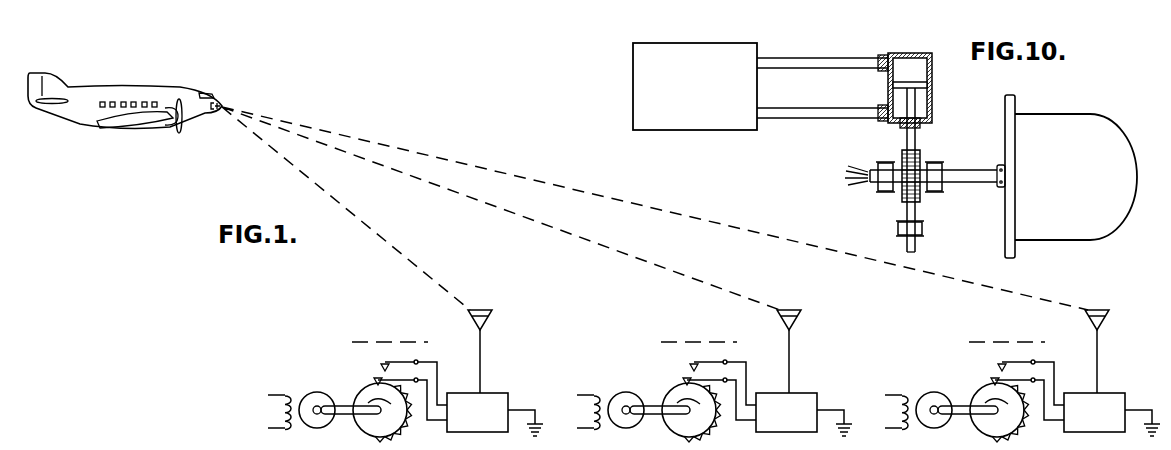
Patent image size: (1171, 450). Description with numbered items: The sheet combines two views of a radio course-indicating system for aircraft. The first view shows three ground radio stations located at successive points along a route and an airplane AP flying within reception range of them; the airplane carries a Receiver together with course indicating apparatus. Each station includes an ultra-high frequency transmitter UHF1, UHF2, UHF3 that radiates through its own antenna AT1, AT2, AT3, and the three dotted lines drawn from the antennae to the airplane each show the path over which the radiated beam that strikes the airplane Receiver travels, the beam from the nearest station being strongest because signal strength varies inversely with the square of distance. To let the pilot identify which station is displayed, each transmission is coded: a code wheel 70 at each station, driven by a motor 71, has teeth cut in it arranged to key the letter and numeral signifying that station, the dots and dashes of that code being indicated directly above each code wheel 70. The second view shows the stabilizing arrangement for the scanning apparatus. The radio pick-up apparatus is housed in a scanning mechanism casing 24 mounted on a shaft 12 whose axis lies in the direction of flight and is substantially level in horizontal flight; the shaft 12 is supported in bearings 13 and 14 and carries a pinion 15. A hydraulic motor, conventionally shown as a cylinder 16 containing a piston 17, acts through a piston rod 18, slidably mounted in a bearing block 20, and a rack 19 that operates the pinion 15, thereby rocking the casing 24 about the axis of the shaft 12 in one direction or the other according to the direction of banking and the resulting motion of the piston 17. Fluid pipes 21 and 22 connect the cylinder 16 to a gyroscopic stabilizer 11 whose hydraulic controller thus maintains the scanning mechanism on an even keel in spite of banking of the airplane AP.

In FIG. 1, the airplane AP is at (93, 118).
In FIG. 1, the airplane receiver Receiver is at (226, 101).
In FIG. 1, the antenna AT1 is at (491, 318).
In FIG. 1, the antenna AT2 is at (804, 351).
In FIG. 1, the antenna AT3 is at (1112, 351).
In FIG. 1, the transmitter UHF1 is at (494, 395).
In FIG. 1, the transmitter UHF2 is at (756, 380).
In FIG. 1, the transmitter UHF3 is at (1064, 380).
In FIG. 1, the code wheel 70 is at (368, 393).
In FIG. 1, the motor 71 is at (305, 396).
In FIG. 10, the gyroscopic stabilizer 11 is at (717, 130).
In FIG. 10, the shaft 12 is at (953, 180).
In FIG. 10, the bearing 13 is at (880, 186).
In FIG. 10, the bearing 14 is at (941, 187).
In FIG. 10, the pinion 15 is at (903, 156).
In FIG. 10, the cylinder 16 is at (897, 42).
In FIG. 10, the piston 17 is at (902, 87).
In FIG. 10, the piston rod 18 is at (915, 137).
In FIG. 10, the rack 19 is at (921, 199).
In FIG. 10, the bearing block 20 is at (900, 228).
In FIG. 10, the fluid pipe 21 is at (817, 67).
In FIG. 10, the fluid pipe 22 is at (820, 118).
In FIG. 10, the scanning mechanism casing 24 is at (1092, 123).